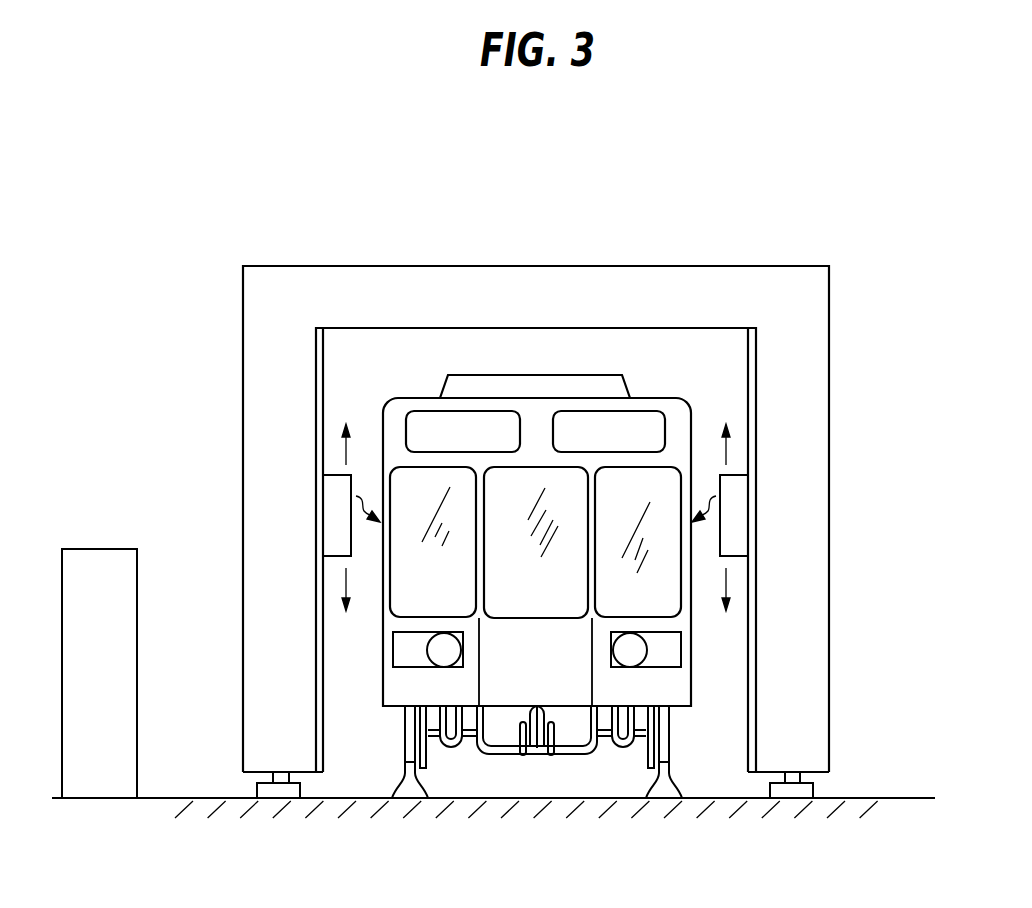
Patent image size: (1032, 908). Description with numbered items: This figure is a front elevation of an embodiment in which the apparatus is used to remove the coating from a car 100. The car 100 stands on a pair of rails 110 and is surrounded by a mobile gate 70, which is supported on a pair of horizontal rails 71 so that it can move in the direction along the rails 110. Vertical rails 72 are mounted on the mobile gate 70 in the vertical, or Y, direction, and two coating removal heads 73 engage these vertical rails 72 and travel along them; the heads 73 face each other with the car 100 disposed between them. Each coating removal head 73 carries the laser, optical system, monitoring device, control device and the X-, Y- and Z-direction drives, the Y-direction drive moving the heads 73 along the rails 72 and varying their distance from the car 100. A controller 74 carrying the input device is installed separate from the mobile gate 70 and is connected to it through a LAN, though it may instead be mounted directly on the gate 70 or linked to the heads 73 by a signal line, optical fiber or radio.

The mobile gate 70 is at (738, 266).
The horizontal rails 71 is at (253, 792).
The vertical rails 72 is at (323, 720).
The coating removal heads 73 is at (337, 518).
The controller 74 is at (98, 548).
The car 100 is at (537, 565).
The rails 110 is at (410, 796).